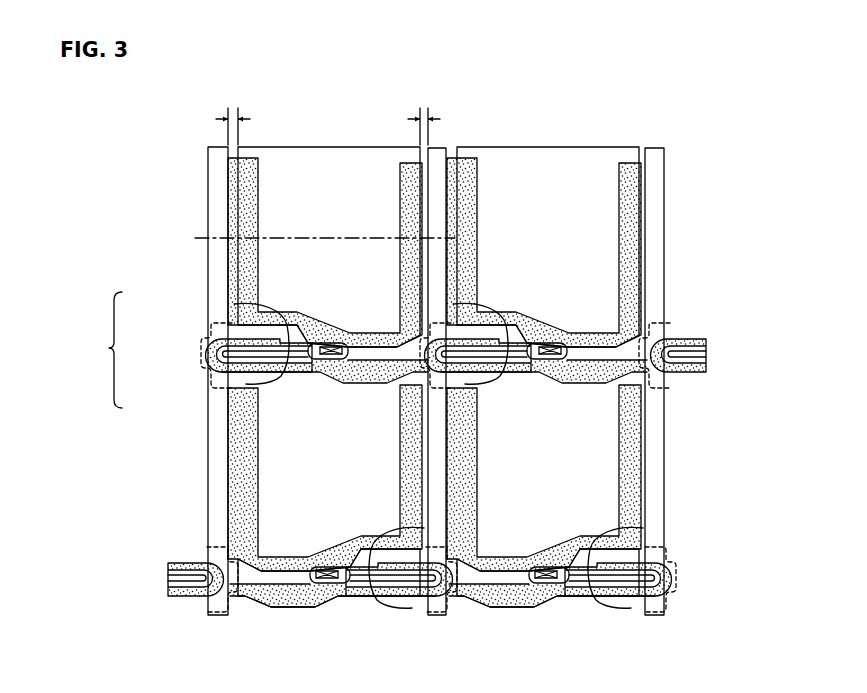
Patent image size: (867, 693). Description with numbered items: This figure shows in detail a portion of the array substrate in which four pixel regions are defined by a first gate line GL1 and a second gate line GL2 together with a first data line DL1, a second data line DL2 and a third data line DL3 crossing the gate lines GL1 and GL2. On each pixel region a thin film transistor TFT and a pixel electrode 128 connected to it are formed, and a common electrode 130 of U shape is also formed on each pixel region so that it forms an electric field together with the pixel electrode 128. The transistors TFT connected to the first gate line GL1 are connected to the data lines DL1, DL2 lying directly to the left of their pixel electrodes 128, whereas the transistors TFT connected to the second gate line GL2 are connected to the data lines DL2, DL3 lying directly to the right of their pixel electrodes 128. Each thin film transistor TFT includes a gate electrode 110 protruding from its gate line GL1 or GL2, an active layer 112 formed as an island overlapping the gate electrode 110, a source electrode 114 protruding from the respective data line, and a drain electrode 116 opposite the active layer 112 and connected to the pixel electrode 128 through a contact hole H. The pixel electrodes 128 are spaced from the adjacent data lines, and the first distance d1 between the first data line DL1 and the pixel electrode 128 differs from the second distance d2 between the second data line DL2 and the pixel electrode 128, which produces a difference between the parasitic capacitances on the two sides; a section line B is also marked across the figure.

The gate electrode 110 is at (240, 305).
The active layer 112 is at (207, 327).
The source electrode 114 is at (203, 348).
The drain electrode 116 is at (230, 377).
The pixel electrode 128 is at (327, 155).
The common electrode 130 is at (233, 202).
The contact hole H is at (330, 346).
The thin film transistor TFT is at (98, 350).
The first data line DL1 is at (217, 170).
The second data line DL2 is at (437, 145).
The third data line DL3 is at (653, 145).
The first gate line GL1 is at (597, 363).
The second gate line GL2 is at (517, 598).
The first distance d1 is at (233, 119).
The second distance d2 is at (424, 119).
The section line B-B' B is at (326, 240).